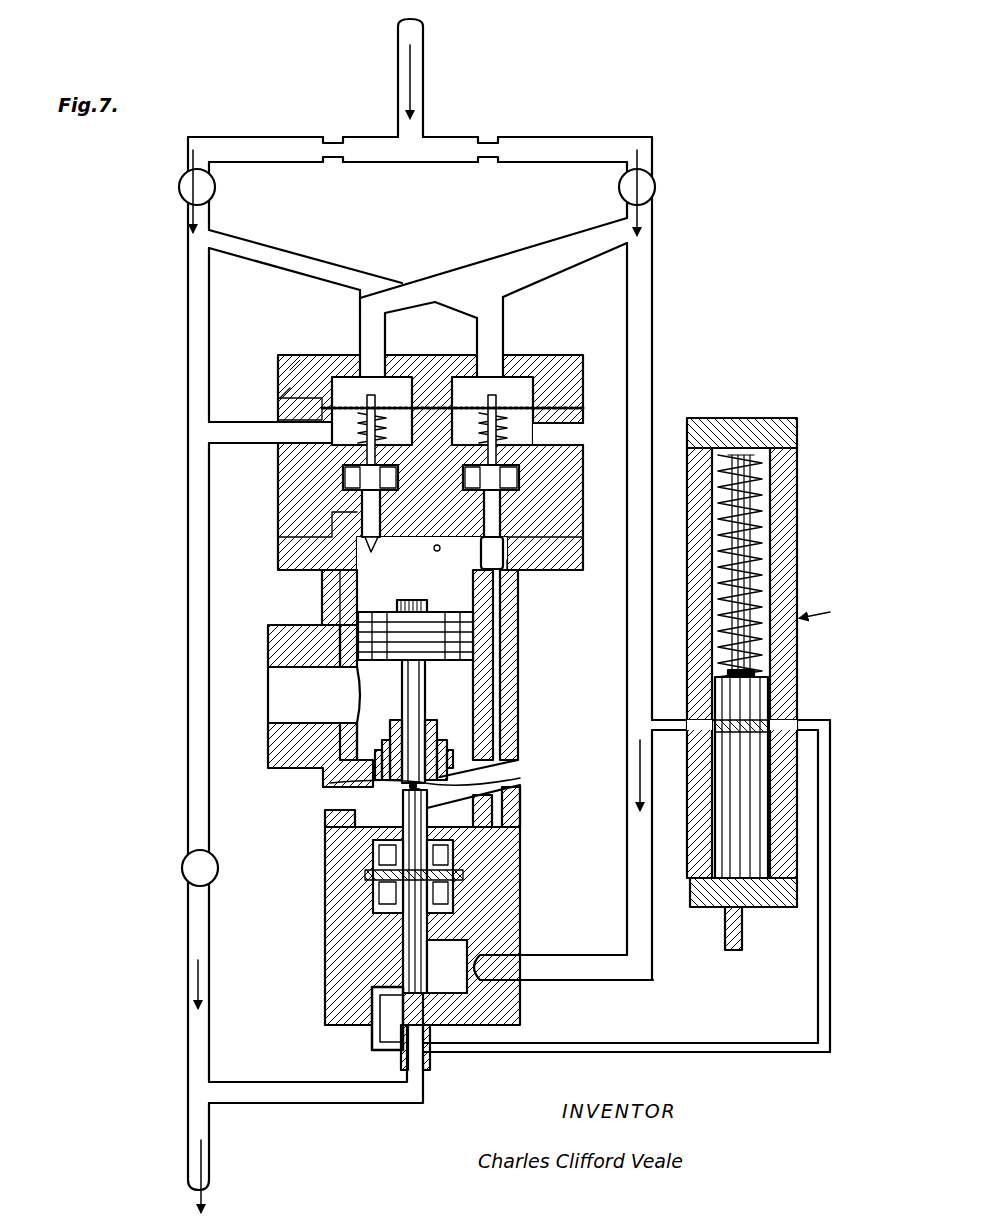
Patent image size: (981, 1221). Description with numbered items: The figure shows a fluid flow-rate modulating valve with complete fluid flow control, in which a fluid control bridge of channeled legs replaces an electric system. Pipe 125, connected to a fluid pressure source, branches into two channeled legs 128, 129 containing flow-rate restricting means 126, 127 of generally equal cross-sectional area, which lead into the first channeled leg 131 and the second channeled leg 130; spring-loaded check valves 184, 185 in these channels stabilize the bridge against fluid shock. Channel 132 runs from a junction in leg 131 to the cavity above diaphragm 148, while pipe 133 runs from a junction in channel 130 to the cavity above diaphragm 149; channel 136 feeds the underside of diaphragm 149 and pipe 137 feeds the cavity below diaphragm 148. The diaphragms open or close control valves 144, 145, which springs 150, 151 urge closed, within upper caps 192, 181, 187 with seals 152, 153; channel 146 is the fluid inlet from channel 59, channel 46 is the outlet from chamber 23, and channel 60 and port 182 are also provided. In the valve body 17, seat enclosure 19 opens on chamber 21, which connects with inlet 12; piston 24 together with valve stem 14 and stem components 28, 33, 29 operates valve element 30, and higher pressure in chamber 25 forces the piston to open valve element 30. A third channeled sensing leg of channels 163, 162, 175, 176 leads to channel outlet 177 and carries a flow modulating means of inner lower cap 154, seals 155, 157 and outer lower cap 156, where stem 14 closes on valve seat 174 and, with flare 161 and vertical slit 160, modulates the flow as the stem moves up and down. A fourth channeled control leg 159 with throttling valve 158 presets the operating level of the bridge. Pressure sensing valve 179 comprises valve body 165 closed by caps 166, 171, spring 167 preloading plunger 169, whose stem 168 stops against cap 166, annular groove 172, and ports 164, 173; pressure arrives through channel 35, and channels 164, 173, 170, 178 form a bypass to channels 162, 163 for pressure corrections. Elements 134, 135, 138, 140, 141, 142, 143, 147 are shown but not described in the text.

The inlet 12 is at (275, 722).
The valve stem 14 is at (430, 790).
The valve body 17 is at (518, 636).
The valve seat enclosure 19 is at (492, 777).
The chamber 21 is at (495, 692).
The cylinder chamber 23 is at (505, 582).
The piston 24 is at (338, 630).
The cylinder chamber 25 is at (495, 818).
The valve stem component 28 is at (422, 690).
The valve stem component 29 is at (392, 728).
The valve element 30 is at (437, 745).
The valve stem component 33 is at (398, 612).
The pressure inlet channel 35 is at (745, 930).
The fluid outlet means 46 is at (300, 566).
The channel 59 is at (500, 705).
The channel 60 is at (522, 800).
The pipe 125 is at (424, 76).
The fluid flow-rate restricting means 126 is at (330, 140).
The fluid flow-rate restricting means 127 is at (497, 140).
The channeled leg 128 is at (238, 137).
The channeled leg 129 is at (580, 137).
The second channeled leg 130 is at (640, 300).
The first channeled leg 131 is at (186, 278).
The channel 132 is at (268, 248).
The pipe 133 is at (548, 252).
The right inlet channel 134 is at (505, 318).
The left inlet channel 135 is at (388, 325).
The channel 136 is at (282, 437).
The pipe 137 is at (583, 440).
The space 138 is at (596, 296).
The left valve chamber 140 is at (372, 457).
The right valve chamber 141 is at (492, 457).
The lower body block 142 is at (540, 520).
The stem bore 143 is at (355, 495).
The control valve 144 is at (374, 552).
The control valve 145 is at (482, 565).
The fluid inlet channel 146 is at (411, 593).
The body block 147 is at (340, 520).
The diaphragm 148 is at (540, 395).
The diaphragm 149 is at (330, 380).
The spring 150 is at (540, 409).
The spring 151 is at (300, 412).
The seal 152 is at (520, 478).
The seal 153 is at (345, 478).
The inner lower cap 154 is at (465, 838).
The seal 155 is at (455, 858).
The outer lower cap 156 is at (505, 898).
The seal 157 is at (372, 895).
The throttling valve 158 is at (182, 868).
The fourth channeled control leg 159 is at (164, 991).
The vertical slit 160 is at (465, 1030).
The flare 161 is at (485, 985).
The channel 162 is at (618, 988).
The channel 163 is at (632, 775).
The port 164 is at (680, 718).
The valve body 165 is at (785, 582).
The cap 166 is at (750, 418).
The spring 167 is at (770, 470).
The plunger stem 168 is at (752, 560).
The plunger valve 169 is at (760, 690).
The channel 170 is at (822, 992).
The cap 171 is at (698, 966).
The annular groove 172 is at (770, 724).
The port 173 is at (818, 738).
The valve seat 174 is at (372, 1025).
The channel 175 is at (425, 1080).
The channel 176 is at (333, 1103).
The channel outlet 177 is at (208, 1178).
The channel 178 is at (670, 1043).
The pressure sensing valve 179 is at (825, 611).
The upper cap 181 is at (505, 505).
The port 182 is at (433, 545).
The spring-loaded check valve 184 is at (210, 178).
The spring-loaded check valve 185 is at (655, 186).
The upper cap 187 is at (395, 362).
The upper cap 192 is at (300, 405).